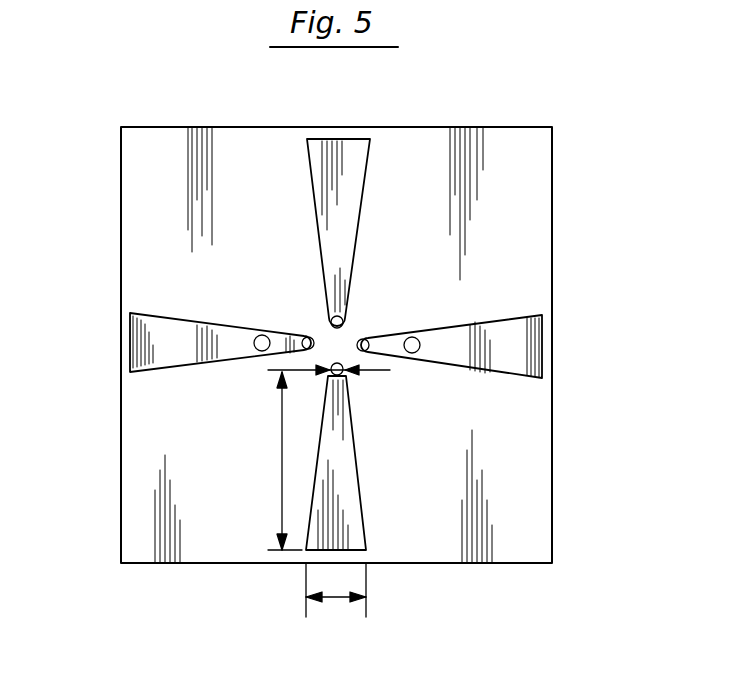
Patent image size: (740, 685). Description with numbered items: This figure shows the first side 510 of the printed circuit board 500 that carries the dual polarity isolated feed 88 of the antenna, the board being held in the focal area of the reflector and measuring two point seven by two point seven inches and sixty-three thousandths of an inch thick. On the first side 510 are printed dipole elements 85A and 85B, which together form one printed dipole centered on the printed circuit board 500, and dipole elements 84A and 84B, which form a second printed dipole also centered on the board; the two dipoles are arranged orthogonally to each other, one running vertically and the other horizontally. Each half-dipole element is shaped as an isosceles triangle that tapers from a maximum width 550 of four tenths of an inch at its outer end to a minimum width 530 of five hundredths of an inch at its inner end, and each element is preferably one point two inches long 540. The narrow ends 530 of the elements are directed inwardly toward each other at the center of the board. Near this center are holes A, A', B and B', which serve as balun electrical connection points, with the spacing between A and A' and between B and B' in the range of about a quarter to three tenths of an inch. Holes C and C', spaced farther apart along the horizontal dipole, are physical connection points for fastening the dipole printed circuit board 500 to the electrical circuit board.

The printed circuit board 500 is at (554, 215).
The first side 510 is at (185, 428).
The minimum width 530 is at (370, 372).
The length 540 is at (280, 436).
The maximum width 550 is at (335, 600).
The dipole element 84A is at (542, 348).
The dipole element 84B is at (130, 348).
The dipole element 85A is at (338, 137).
The dipole element 85B is at (352, 502).
The dual polarity isolated feed 88 is at (277, 275).
The hole A is at (298, 314).
The hole B is at (358, 299).
The hole C is at (254, 315).
The hole A' is at (385, 318).
The hole B' is at (371, 410).
The hole C' is at (432, 320).